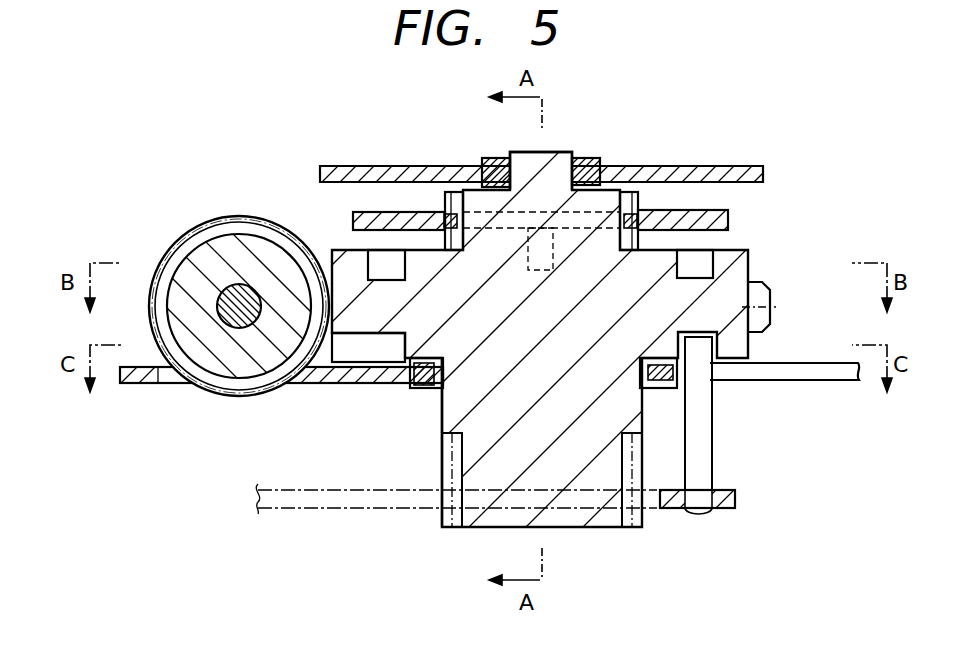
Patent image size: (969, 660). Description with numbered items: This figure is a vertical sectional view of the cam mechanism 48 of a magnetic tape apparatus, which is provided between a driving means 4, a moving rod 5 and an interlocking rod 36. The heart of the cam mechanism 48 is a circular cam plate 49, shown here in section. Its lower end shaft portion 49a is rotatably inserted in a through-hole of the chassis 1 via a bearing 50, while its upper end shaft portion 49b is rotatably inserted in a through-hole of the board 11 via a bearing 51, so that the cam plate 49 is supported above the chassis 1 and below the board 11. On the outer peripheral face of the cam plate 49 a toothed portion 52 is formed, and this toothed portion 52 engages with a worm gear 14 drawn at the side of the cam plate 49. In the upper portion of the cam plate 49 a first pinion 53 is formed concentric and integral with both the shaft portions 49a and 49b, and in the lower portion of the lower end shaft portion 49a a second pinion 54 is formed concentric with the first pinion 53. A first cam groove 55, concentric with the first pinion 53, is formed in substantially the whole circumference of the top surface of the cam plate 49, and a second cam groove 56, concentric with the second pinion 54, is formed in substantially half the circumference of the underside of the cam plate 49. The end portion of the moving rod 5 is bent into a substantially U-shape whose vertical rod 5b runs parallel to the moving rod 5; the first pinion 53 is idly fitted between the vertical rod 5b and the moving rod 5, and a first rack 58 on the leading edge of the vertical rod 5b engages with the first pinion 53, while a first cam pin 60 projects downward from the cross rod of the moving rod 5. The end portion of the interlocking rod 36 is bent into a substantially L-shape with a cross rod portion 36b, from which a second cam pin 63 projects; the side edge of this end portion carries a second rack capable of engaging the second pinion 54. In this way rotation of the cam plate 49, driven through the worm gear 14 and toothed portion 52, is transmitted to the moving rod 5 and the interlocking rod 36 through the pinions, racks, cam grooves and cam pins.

The chassis 1 is at (328, 386).
The driving means 4 is at (127, 190).
The moving rod 5 is at (700, 216).
The vertical rod 5b is at (356, 222).
The board 11 is at (716, 167).
The worm gear 14 is at (222, 216).
The interlocking rod 36 is at (296, 506).
The cross rod portion 36b is at (736, 497).
The cam mechanism 48 is at (797, 137).
The circular cam plate 49 is at (740, 270).
The lower end shaft portion 49a is at (442, 413).
The upper end shaft portion 49b is at (566, 152).
The bearing 50 is at (664, 389).
The bearing 51 is at (500, 158).
The toothed portion 52 is at (772, 307).
The first pinion 53 is at (457, 196).
The second pinion 54 is at (443, 518).
The first cam groove 55 is at (705, 262).
The second cam groove 56 is at (712, 380).
The first rack 58 is at (446, 212).
The first cam pin 60 is at (550, 252).
The second cam pin 63 is at (713, 440).